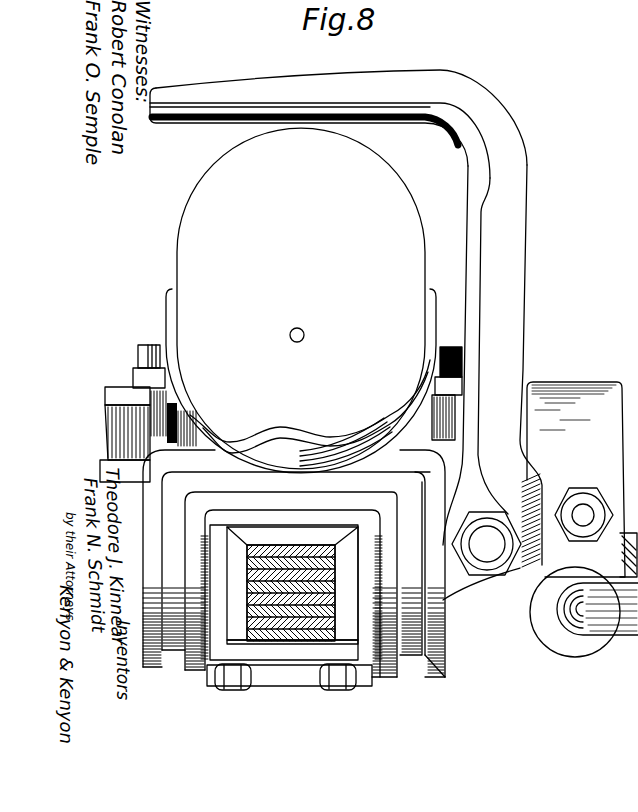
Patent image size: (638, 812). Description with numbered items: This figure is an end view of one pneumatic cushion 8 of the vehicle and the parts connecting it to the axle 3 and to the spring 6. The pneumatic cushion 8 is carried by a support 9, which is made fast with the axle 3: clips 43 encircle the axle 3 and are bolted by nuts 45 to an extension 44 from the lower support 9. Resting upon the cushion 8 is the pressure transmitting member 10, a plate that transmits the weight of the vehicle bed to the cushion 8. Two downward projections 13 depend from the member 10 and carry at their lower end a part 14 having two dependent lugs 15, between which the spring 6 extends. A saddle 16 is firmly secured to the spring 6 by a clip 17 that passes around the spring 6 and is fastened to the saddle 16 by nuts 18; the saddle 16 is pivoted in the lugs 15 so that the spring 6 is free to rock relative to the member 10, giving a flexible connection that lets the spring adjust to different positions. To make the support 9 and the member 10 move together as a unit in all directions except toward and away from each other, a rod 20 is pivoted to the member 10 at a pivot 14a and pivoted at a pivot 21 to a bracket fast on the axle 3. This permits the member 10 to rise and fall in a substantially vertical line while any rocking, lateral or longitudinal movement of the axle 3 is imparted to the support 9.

The axle 3 is at (105, 403).
The spring 6 is at (297, 620).
The pneumatic cushion 8 is at (186, 203).
The support 9 is at (166, 298).
The pressure transmitting member 10 is at (405, 108).
The downward projections 13 is at (507, 290).
The part 14 is at (287, 485).
The pivot 14a is at (483, 568).
The lugs 15 is at (175, 567).
The saddle 16 is at (188, 672).
The clip 17 is at (277, 537).
The nuts 18 is at (226, 689).
The rod 20 is at (523, 575).
The pivot 21 is at (566, 630).
The clips 43 is at (155, 435).
The extension 44 is at (135, 378).
The nuts 45 is at (138, 348).